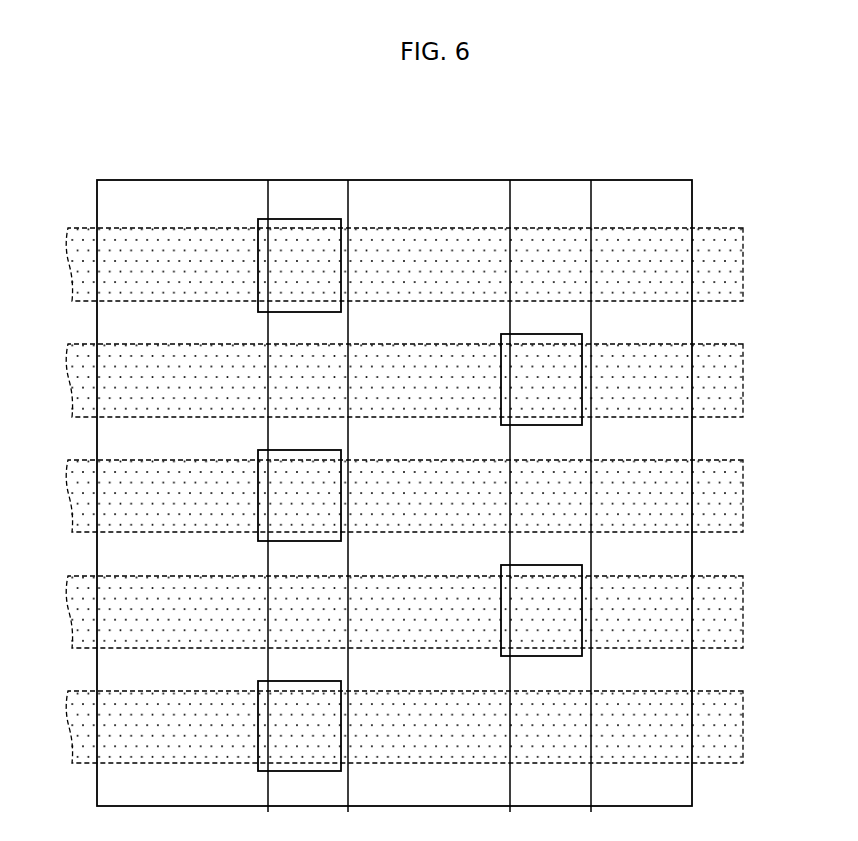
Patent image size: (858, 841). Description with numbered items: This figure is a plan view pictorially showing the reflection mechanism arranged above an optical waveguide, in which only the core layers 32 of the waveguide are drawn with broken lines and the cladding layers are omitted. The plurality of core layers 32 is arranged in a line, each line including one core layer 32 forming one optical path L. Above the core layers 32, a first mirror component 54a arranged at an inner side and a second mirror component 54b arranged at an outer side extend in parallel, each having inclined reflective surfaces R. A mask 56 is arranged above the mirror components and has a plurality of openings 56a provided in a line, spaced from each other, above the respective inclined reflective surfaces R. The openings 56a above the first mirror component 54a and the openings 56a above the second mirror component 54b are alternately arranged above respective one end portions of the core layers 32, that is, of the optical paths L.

The core layer 32 is at (718, 228).
The first mirror component 54a is at (350, 208).
The second mirror component 54b is at (592, 208).
The mask 56 is at (693, 443).
The opening 56a is at (258, 262).
The inclined reflective surface R is at (288, 200).
The optical path L is at (765, 270).